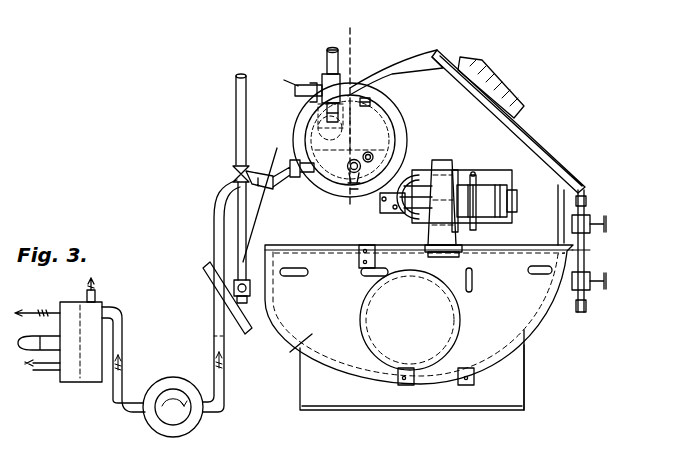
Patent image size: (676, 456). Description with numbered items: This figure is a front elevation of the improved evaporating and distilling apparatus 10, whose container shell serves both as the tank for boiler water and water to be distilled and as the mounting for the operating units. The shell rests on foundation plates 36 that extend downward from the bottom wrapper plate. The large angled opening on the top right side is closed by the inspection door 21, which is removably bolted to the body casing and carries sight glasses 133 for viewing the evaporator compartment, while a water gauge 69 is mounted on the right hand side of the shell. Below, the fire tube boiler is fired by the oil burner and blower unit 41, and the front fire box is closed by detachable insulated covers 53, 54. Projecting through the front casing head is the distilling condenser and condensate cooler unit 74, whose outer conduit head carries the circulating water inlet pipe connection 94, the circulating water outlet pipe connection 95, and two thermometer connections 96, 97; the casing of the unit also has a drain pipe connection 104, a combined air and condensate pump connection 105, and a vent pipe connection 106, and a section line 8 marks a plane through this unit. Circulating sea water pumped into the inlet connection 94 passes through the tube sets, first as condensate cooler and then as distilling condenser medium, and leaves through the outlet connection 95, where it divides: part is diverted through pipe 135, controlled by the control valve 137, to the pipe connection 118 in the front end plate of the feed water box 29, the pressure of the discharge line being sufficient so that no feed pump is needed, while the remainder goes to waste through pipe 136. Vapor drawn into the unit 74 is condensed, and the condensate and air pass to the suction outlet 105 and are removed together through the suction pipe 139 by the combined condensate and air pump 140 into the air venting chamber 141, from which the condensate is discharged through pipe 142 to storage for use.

The section line 8 is at (384, 41).
The evaporating and distilling apparatus 10 is at (412, 386).
The inspection door 21 is at (552, 146).
The feed water box 29 is at (252, 308).
The foundation plates 36 is at (526, 388).
The oil burner and blower unit 41 is at (460, 292).
The detachable insulated cover 53 is at (305, 338).
The detachable insulated cover 54 is at (532, 312).
The water gauge 69 is at (590, 250).
The distilling condenser and condensate cooler unit 74 is at (398, 132).
The circulating water inlet pipe connection 94 is at (343, 185).
The circulating water outlet pipe connection 95 is at (318, 104).
The thermometer connection 96 is at (380, 158).
The thermometer connection 97 is at (325, 125).
The drain pipe connection 104 is at (412, 210).
The combined air and condensate pump connection 105 is at (316, 178).
The vent pipe connection 106 is at (378, 100).
The pipe connection 118 is at (250, 292).
The sight glasses 133 is at (510, 95).
The pipe 135 is at (322, 82).
The pipe 136 is at (327, 60).
The control valve 137 is at (233, 167).
The suction pipe 139 is at (214, 202).
The combined condensate and air pump 140 is at (176, 382).
The air venting chamber 141 is at (86, 385).
The pipe 142 is at (55, 306).